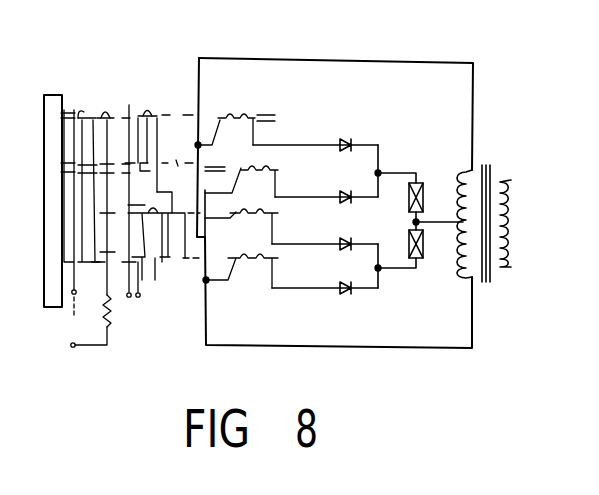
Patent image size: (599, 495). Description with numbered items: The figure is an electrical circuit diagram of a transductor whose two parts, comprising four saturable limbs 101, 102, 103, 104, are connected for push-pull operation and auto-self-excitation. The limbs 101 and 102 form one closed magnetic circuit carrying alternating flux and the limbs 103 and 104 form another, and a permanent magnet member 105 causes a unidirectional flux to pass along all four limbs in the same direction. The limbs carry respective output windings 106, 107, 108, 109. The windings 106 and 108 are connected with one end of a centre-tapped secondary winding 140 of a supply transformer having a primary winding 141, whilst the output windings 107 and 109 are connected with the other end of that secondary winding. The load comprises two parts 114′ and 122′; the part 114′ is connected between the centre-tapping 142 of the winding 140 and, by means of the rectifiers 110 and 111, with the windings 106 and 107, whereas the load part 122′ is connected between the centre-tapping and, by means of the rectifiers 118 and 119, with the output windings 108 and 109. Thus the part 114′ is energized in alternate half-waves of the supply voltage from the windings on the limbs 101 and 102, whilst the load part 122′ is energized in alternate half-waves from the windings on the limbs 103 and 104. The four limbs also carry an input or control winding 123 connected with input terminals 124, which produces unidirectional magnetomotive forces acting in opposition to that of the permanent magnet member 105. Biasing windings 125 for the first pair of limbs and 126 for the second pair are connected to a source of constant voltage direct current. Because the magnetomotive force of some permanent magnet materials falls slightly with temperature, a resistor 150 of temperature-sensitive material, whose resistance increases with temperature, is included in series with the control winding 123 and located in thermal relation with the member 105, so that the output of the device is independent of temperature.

The permanent magnet member 105 is at (55, 95).
The input or control winding 123 is at (78, 113).
The biasing winding 125 is at (128, 113).
The limb 101 is at (178, 123).
The limb 102 is at (173, 174).
The limb 103 is at (147, 262).
The limb 104 is at (202, 278).
The output winding 106 is at (238, 118).
The output winding 107 is at (249, 168).
The output winding 108 is at (250, 211).
The output winding 109 is at (250, 256).
The rectifier 110 is at (346, 139).
The rectifier 111 is at (346, 191).
The rectifier 118 is at (346, 238).
The rectifier 119 is at (325, 277).
The load part 114' is at (432, 191).
The load part 122' is at (433, 244).
The centre-tapping 142 is at (452, 221).
The centre-tapped secondary winding 140 is at (464, 176).
The primary winding 141 is at (506, 222).
The input terminals 124 is at (70, 345).
The biasing winding 126 is at (146, 311).
The resistor 150 is at (113, 322).